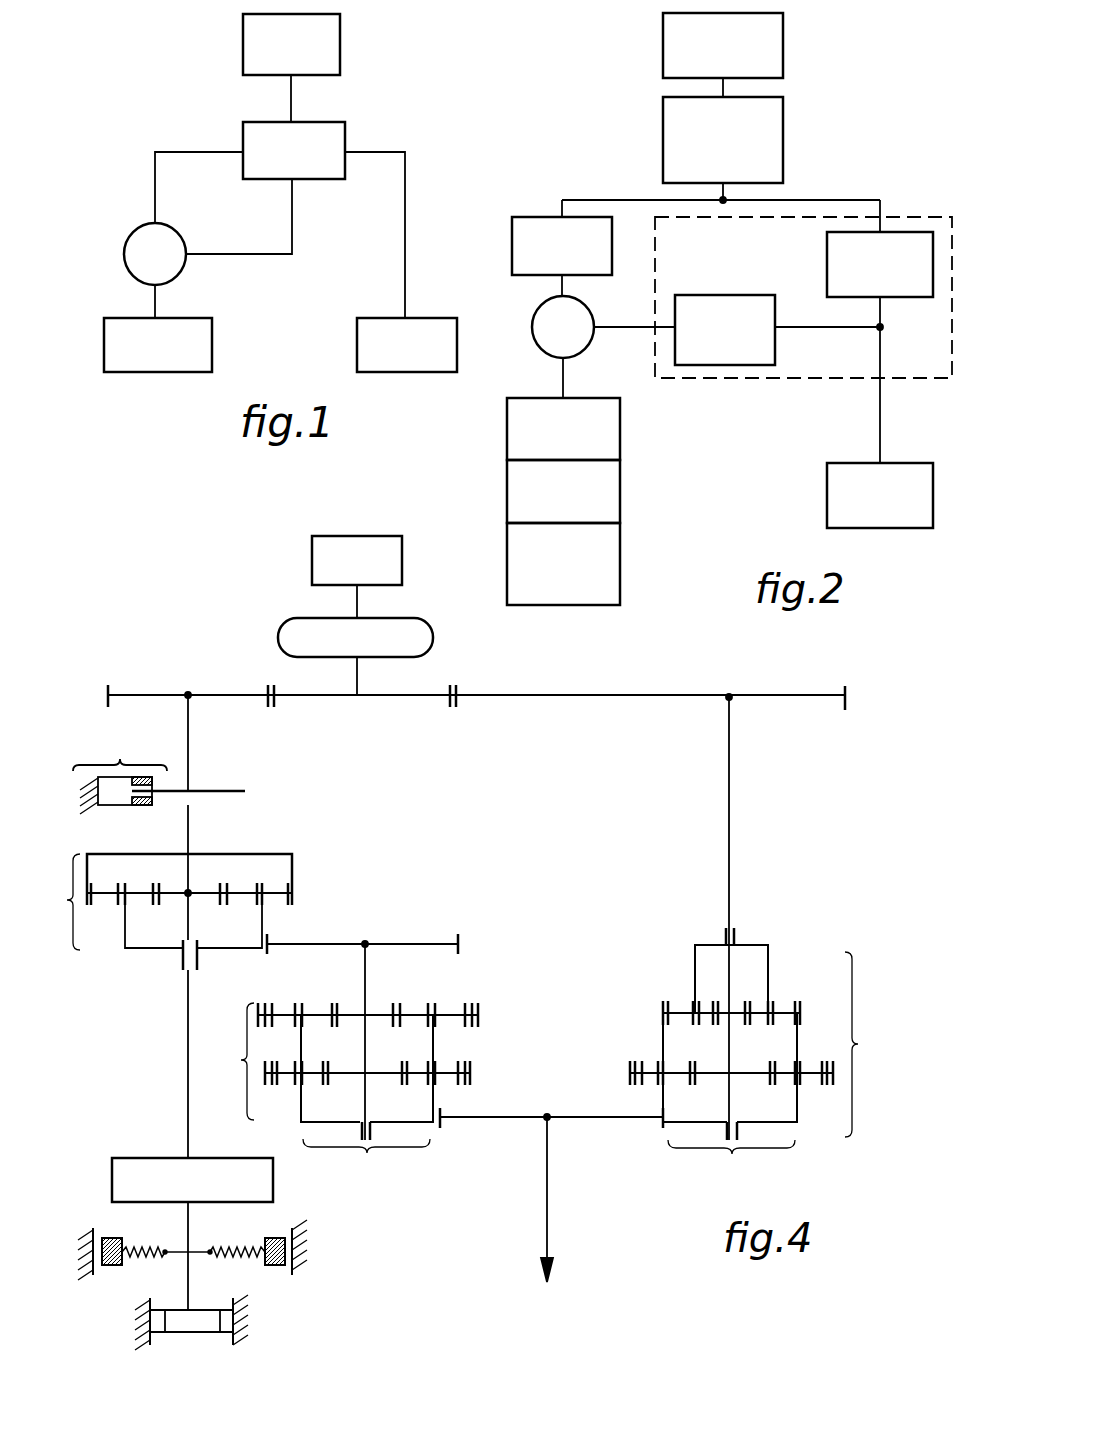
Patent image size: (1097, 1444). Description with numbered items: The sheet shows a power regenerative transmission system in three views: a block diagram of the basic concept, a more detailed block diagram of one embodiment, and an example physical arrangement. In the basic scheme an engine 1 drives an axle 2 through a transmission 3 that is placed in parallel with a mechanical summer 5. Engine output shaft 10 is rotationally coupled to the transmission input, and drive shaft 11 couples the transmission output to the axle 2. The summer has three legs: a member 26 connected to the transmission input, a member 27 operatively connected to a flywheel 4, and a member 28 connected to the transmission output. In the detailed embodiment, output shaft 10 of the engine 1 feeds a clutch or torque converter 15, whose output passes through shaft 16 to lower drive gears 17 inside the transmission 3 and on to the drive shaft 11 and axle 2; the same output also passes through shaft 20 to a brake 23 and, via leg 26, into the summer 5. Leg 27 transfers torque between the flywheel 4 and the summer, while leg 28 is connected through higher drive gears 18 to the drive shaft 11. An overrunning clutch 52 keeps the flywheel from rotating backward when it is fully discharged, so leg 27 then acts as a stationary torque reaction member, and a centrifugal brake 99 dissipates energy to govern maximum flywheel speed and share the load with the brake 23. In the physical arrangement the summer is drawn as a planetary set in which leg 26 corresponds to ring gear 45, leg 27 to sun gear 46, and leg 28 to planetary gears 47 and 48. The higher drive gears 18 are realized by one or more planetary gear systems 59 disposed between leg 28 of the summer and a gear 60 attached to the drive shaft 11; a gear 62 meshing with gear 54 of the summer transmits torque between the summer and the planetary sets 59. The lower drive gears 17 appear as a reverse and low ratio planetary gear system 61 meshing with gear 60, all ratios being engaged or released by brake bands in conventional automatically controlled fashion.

In FIG. 1, the engine 1 is at (340, 48).
In FIG. 2, the engine 1 is at (783, 40).
In FIG. 4, the engine 1 is at (312, 555).
In FIG. 1, the axle 2 is at (357, 340).
In FIG. 2, the axle 2 is at (827, 488).
In FIG. 1, the transmission 3 is at (345, 128).
In FIG. 2, the transmission 3 is at (793, 380).
In FIG. 1, the flywheel 4 is at (138, 372).
In FIG. 2, the flywheel 4 is at (620, 445).
In FIG. 4, the flywheel 4 is at (135, 1158).
In FIG. 1, the mechanical summer 5 is at (135, 237).
In FIG. 2, the mechanical summer 5 is at (540, 350).
In FIG. 4, the mechanical summer 5 is at (197, 916).
In FIG. 1, the engine output shaft 10 is at (291, 106).
In FIG. 2, the engine output shaft 10 is at (723, 90).
In FIG. 4, the engine output shaft 10 is at (357, 600).
In FIG. 1, the drive shaft 11 is at (405, 190).
In FIG. 2, the drive shaft 11 is at (880, 408).
In FIG. 4, the drive shaft 11 is at (547, 1218).
In FIG. 2, the torque converter 15 is at (783, 145).
In FIG. 4, the torque converter 15 is at (278, 635).
In FIG. 2, the shaft 16 is at (802, 200).
In FIG. 4, the shaft 16 is at (729, 770).
In FIG. 2, the lower drive gears 17 is at (905, 232).
In FIG. 4, the lower drive gears 17 is at (756, 1032).
In FIG. 2, the higher drive gears 18 is at (720, 293).
In FIG. 4, the higher drive gears 18 is at (341, 1061).
In FIG. 2, the shaft 20 is at (588, 200).
In FIG. 4, the shaft 20 is at (188, 760).
In FIG. 2, the brake 23 is at (520, 217).
In FIG. 4, the brake 23 is at (159, 776).
In FIG. 1, the leg 26 is at (155, 160).
In FIG. 2, the leg 26 is at (562, 283).
In FIG. 4, the leg 26 is at (188, 827).
In FIG. 1, the leg 27 is at (153, 298).
In FIG. 2, the leg 27 is at (563, 385).
In FIG. 4, the leg 27 is at (188, 1043).
In FIG. 1, the leg 28 is at (245, 254).
In FIG. 2, the leg 28 is at (630, 305).
In FIG. 4, the leg 28 is at (365, 980).
In FIG. 4, the ring gear 45 is at (292, 875).
In FIG. 4, the sun gear 46 is at (178, 890).
In FIG. 4, the planetary gear 47 is at (235, 893).
In FIG. 4, the planetary gear 48 is at (110, 888).
In FIG. 2, the overrunning clutch 52 is at (620, 575).
In FIG. 4, the overrunning clutch 52 is at (155, 1332).
In FIG. 4, the gear 54 is at (143, 948).
In FIG. 4, the planetary gear systems 59 is at (370, 1100).
In FIG. 4, the gear 60 is at (512, 1117).
In FIG. 4, the planetary gear system 61 is at (730, 1098).
In FIG. 4, the gear 62 is at (340, 945).
In FIG. 2, the centrifugal brake 99 is at (620, 505).
In FIG. 4, the centrifugal brake 99 is at (112, 1265).